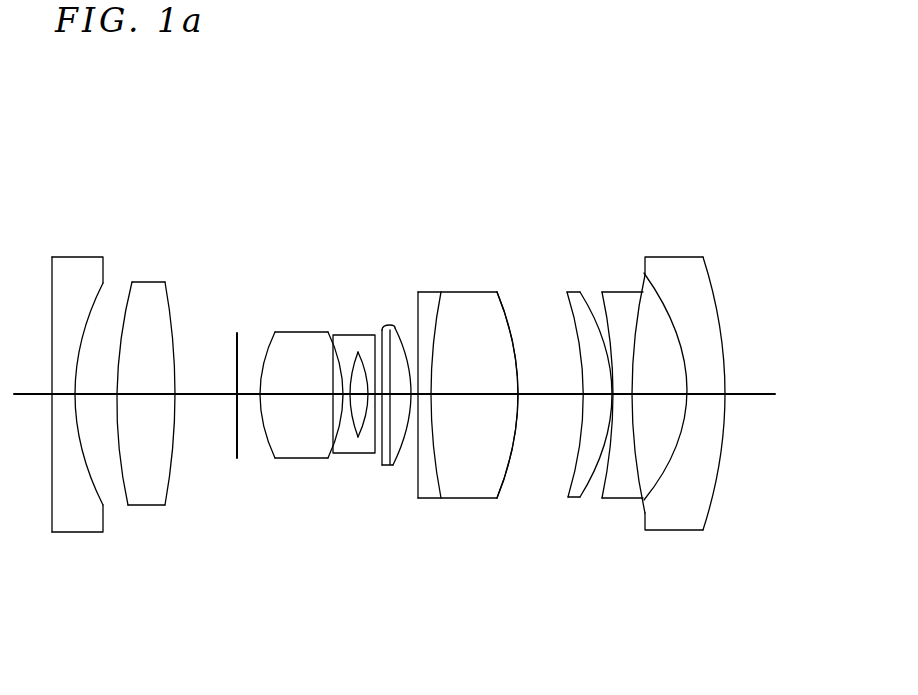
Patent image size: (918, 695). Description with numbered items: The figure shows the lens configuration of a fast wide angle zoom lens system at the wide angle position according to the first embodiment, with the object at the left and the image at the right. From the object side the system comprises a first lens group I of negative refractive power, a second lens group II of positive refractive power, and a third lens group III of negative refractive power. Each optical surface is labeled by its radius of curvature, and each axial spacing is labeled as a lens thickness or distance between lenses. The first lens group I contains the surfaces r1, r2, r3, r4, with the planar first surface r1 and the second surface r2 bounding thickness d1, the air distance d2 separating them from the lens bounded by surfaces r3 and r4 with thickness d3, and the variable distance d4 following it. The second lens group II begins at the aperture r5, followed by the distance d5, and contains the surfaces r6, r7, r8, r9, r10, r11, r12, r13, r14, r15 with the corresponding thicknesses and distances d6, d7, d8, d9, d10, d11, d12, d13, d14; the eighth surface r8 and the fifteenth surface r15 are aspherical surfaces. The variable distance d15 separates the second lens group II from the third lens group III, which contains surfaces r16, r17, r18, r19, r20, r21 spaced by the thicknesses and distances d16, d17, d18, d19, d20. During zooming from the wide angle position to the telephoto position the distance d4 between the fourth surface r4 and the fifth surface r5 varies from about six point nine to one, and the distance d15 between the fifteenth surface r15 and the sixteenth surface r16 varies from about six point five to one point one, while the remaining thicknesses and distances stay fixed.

The first lens group I is at (185, 200).
The second lens group II is at (608, 120).
The third lens group III is at (808, 207).
The radius of curvature of first surface r1 is at (52, 383).
The radius of curvature of second surface r2 is at (78, 357).
The radius of curvature of third surface r3 is at (120, 340).
The radius of curvature of fourth surface r4 is at (173, 332).
The radius of curvature of fifth surface r5 is at (235, 358).
The radius of curvature of sixth surface r6 is at (262, 365).
The radius of curvature of seventh surface r7 is at (327, 332).
The radius of curvature of eighth surface r8 is at (347, 350).
The radius of curvature of ninth surface r9 is at (363, 345).
The radius of curvature of tenth surface r10 is at (390, 323).
The radius of curvature of eleventh surface r11 is at (380, 340).
The radius of curvature of twelfth surface r12 is at (400, 345).
The radius of curvature of thirteenth surface r13 is at (434, 384).
The radius of curvature of fourteenth surface r14 is at (510, 315).
The radius of curvature of fifteenth surface r15 is at (515, 228).
The radius of curvature of sixteenth surface r16 is at (575, 323).
The radius of curvature of seventeenth surface r17 is at (589, 302).
The radius of curvature of eighteenth surface r18 is at (603, 330).
The radius of curvature of nineteenth surface r19 is at (633, 347).
The radius of curvature of twentieth surface r20 is at (687, 377).
The radius of curvature of twenty-first surface r21 is at (723, 363).
The lens thickness d1 is at (62, 394).
The distance between lenses d2 is at (120, 394).
The lens thickness d3 is at (145, 394).
The distance between lenses d4 is at (205, 394).
The distance between lenses d5 is at (252, 394).
The lens thickness d6 is at (290, 394).
The lens thickness d7 is at (347, 394).
The distance between lenses d8 is at (360, 335).
The lens thickness d9 is at (373, 394).
The distance between lenses d10 is at (385, 394).
The lens thickness d11 is at (393, 394).
The distance between lenses d12 is at (415, 394).
The lens thickness d13 is at (433, 394).
The lens thickness d14 is at (492, 394).
The distance between lenses d15 is at (550, 394).
The lens thickness d16 is at (595, 394).
The distance between lenses d17 is at (611, 394).
The lens thickness d18 is at (620, 394).
The distance between lenses d19 is at (688, 394).
The lens thickness d20 is at (723, 394).